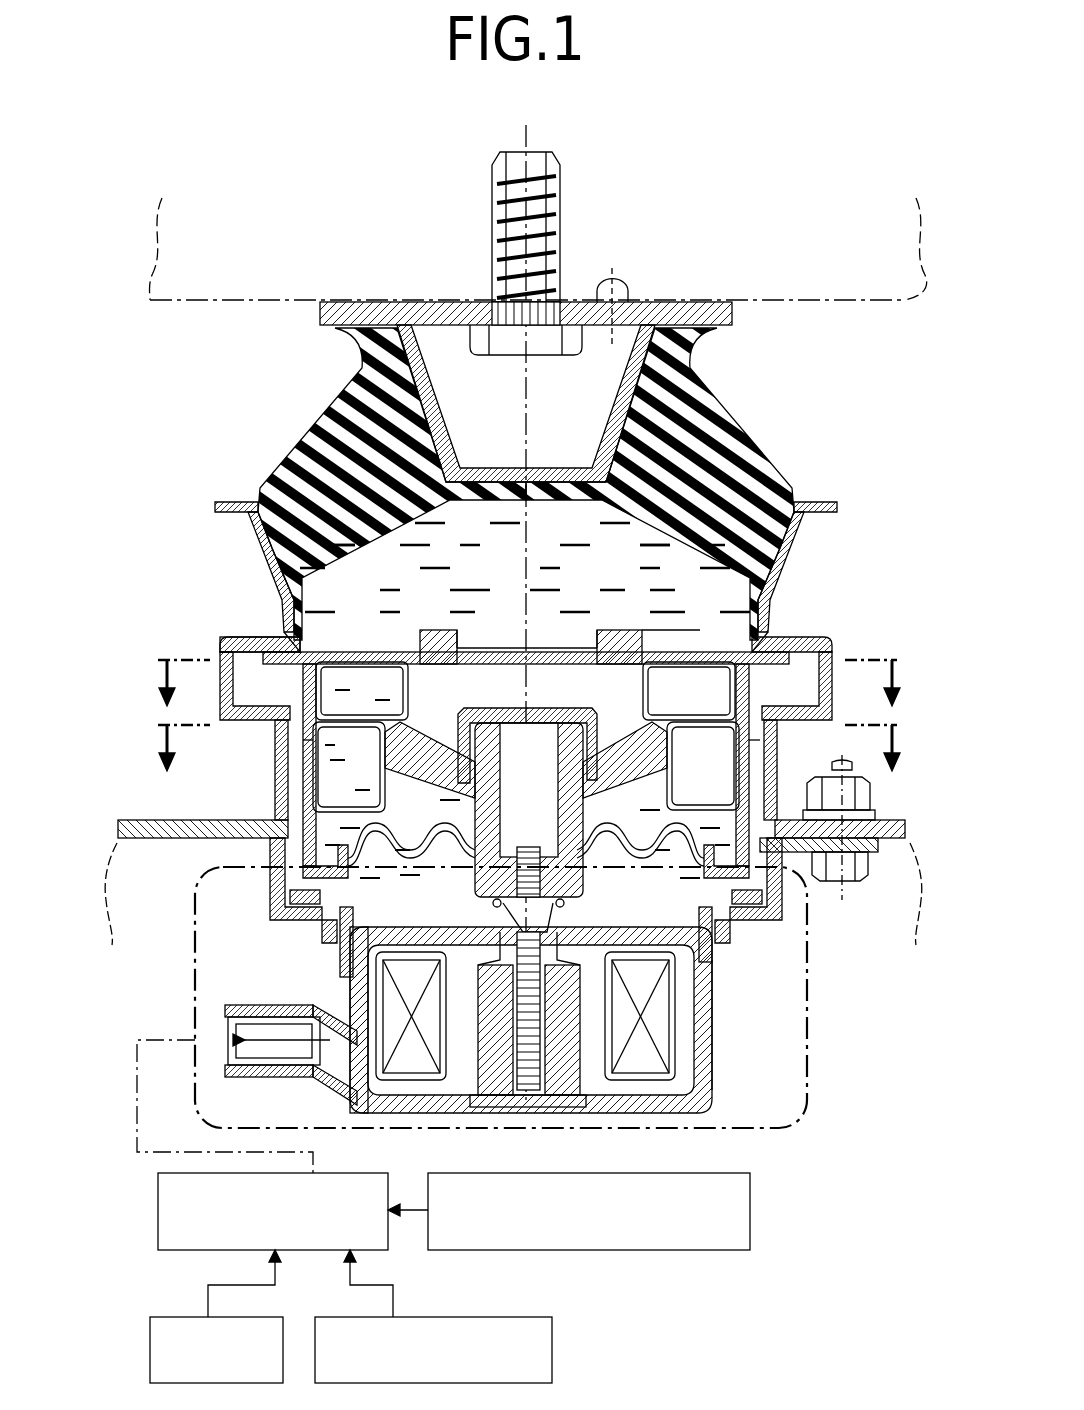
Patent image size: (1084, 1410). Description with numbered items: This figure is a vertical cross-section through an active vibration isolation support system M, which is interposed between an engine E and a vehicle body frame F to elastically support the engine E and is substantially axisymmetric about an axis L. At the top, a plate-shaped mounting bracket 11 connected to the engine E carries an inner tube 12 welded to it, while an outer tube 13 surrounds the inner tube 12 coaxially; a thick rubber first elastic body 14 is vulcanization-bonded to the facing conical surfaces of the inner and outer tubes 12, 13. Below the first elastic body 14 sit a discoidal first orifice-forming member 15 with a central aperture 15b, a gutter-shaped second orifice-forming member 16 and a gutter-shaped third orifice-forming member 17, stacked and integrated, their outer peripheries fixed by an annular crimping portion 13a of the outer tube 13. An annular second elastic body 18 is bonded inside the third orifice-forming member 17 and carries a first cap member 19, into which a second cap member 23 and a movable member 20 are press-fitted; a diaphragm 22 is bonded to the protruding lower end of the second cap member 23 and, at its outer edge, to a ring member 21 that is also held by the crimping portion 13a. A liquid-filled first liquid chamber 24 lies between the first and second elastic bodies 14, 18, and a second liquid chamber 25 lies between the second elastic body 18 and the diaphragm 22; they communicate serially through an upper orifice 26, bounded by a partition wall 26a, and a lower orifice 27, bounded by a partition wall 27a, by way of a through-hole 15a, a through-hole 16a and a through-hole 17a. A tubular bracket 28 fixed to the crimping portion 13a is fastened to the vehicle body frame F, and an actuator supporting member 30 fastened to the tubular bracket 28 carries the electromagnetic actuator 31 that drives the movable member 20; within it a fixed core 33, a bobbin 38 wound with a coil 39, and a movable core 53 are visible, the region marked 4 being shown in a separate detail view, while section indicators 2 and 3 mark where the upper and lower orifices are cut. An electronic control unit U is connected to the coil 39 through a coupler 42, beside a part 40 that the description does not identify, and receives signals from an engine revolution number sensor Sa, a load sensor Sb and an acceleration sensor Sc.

The mounting bracket 11 is at (706, 302).
The inner tube 12 is at (428, 414).
The outer tube 13 is at (128, 722).
The crimping portion 13a is at (232, 640).
The first elastic body 14 is at (332, 432).
The first orifice-forming member 15 is at (440, 626).
The through-hole 15a is at (693, 648).
The aperture 15b is at (470, 642).
The second orifice-forming member 16 is at (376, 676).
The through-hole 16a is at (696, 770).
The third orifice-forming member 17 is at (342, 798).
The through-hole 17a is at (703, 783).
The second elastic body 18 is at (405, 765).
The first cap member 19 is at (548, 710).
The movable member 20 is at (575, 885).
The ring member 21 is at (237, 672).
The diaphragm 22 is at (397, 864).
The second cap member 23 is at (470, 798).
The first liquid chamber 24 is at (525, 567).
The second liquid chamber 25 is at (640, 831).
The upper orifice 26 is at (343, 652).
The partition wall 26a is at (680, 653).
The lower orifice 27 is at (336, 745).
The partition wall 27a is at (723, 783).
The tubular bracket 28 is at (170, 820).
The actuator supporting member 30 is at (272, 880).
The electromagnetic actuator 31 is at (724, 996).
The fixed core 33 is at (578, 1055).
The bobbin 38 is at (415, 958).
The coil 39 is at (662, 1005).
The connector 40 is at (258, 1066).
The coupler 42 is at (250, 1006).
The movable core 53 is at (566, 998).
The actuator unit 4 is at (820, 1068).
The section line 2 is at (529, 662).
The section line 3 is at (529, 770).
The axis L is at (530, 129).
The engine E is at (812, 305).
The active vibration isolation support system M is at (835, 568).
The vehicle body frame F is at (912, 850).
The electronic control unit U is at (158, 1195).
The engine revolution number sensor Sa is at (668, 1252).
The load sensor Sb is at (172, 1317).
The acceleration sensor Sc is at (492, 1317).